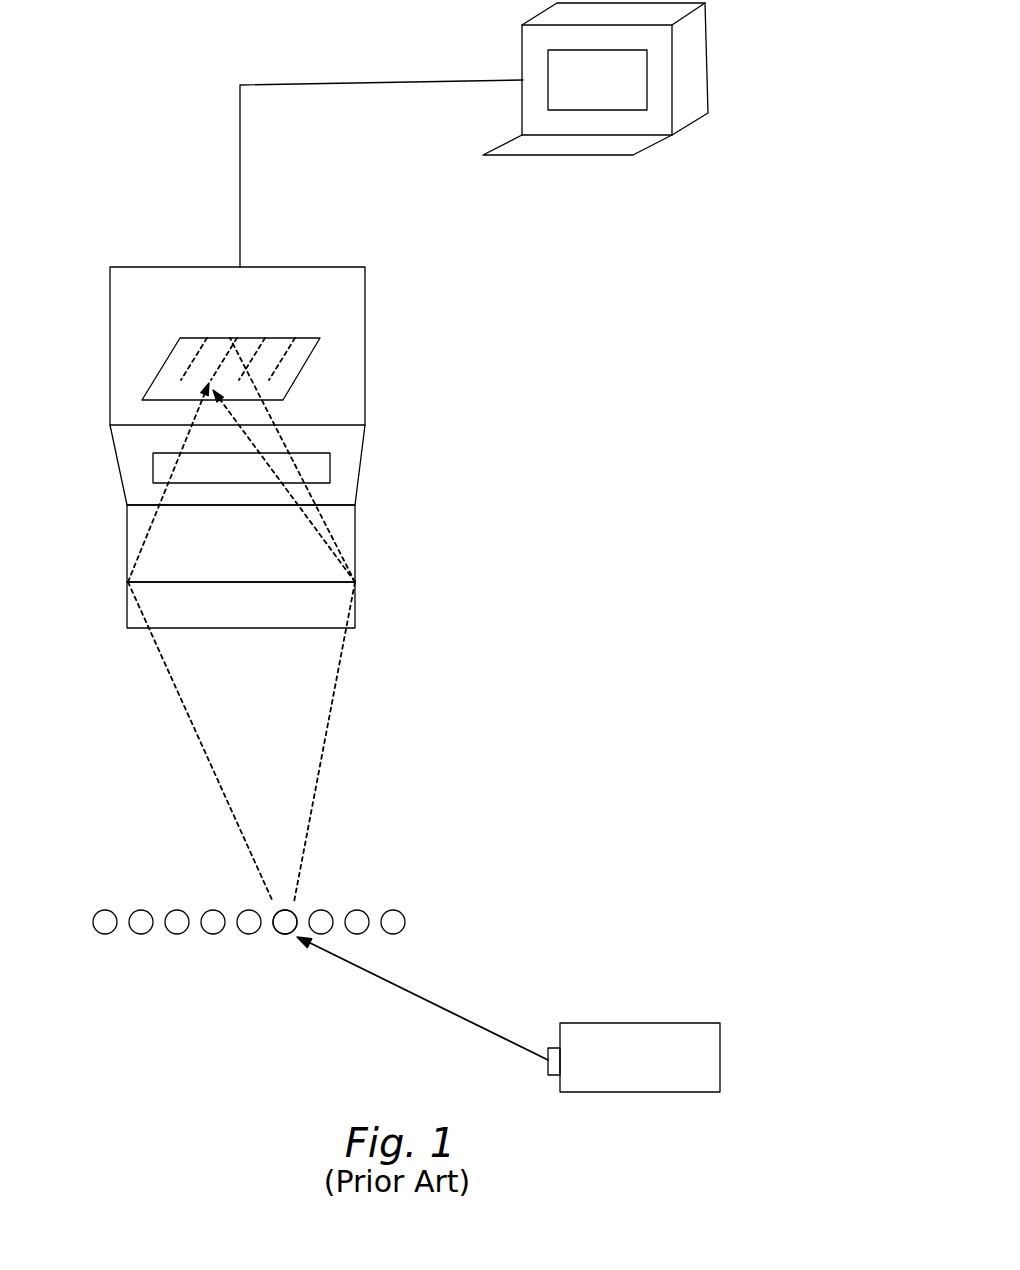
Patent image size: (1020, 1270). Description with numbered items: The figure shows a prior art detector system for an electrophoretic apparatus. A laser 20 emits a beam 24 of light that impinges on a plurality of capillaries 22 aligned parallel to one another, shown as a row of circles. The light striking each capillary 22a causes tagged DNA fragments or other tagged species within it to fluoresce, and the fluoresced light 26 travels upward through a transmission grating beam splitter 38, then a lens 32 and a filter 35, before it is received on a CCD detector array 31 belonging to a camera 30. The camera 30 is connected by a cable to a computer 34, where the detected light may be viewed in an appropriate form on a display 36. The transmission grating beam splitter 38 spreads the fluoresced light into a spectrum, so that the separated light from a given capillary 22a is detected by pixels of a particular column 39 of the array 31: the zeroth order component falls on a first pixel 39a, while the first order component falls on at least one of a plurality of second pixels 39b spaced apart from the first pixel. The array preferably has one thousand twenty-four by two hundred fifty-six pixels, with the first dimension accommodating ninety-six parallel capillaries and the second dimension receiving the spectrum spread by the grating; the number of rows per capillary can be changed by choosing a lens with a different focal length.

The laser 20 is at (720, 1062).
The capillaries 22 is at (422, 902).
The capillary 22a is at (280, 935).
The beam 24 is at (460, 1013).
The fluoresced light 26 is at (322, 762).
The camera 30 is at (352, 298).
The CCD detector array 31 is at (307, 362).
The lens 32 is at (355, 540).
The computer 34 is at (708, 97).
The filter 35 is at (330, 463).
The display 36 is at (556, 80).
The transmission grating beam splitter 38 is at (355, 605).
The column 39 is at (235, 353).
The first pixel 39a is at (213, 385).
The second pixels 39b is at (225, 357).